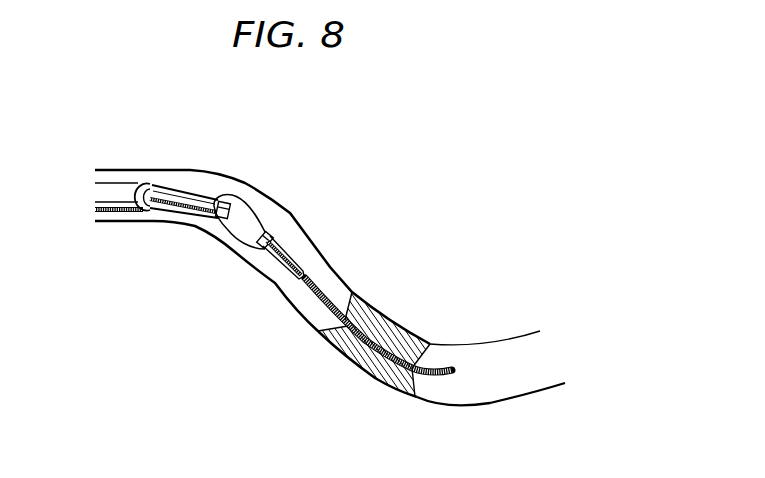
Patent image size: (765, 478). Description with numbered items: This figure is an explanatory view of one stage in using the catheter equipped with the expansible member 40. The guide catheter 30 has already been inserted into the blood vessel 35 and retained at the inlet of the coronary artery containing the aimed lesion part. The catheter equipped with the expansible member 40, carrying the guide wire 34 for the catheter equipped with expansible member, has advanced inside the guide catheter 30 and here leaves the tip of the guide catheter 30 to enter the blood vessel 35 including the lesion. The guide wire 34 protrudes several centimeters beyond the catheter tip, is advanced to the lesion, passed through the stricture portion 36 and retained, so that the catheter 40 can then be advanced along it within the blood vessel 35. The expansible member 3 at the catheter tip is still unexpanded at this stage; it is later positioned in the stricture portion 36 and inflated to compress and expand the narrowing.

The expansible member 3 is at (272, 213).
The guide catheter 30 is at (124, 190).
The guide wire for catheter equipped with expansible member 34 is at (446, 367).
The blood vessel 35 is at (283, 293).
The stricture portion 36 is at (398, 343).
The catheter equipped with expansible member 40 is at (195, 193).